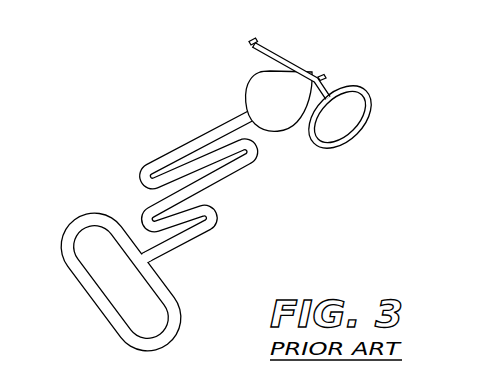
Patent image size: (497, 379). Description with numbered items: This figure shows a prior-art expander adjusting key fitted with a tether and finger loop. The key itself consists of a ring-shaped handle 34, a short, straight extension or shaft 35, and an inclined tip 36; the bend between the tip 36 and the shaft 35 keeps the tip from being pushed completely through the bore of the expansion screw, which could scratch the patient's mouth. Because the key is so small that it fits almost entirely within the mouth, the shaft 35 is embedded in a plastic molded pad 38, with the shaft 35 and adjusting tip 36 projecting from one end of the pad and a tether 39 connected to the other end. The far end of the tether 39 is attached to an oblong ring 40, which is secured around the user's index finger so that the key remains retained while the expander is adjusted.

The ring-shaped handle 34 is at (366, 129).
The shaft 35 is at (272, 41).
The inclined tip 36 is at (256, 36).
The plastic molded pad 38 is at (291, 133).
The tether 39 is at (172, 147).
The oblong ring 40 is at (178, 322).